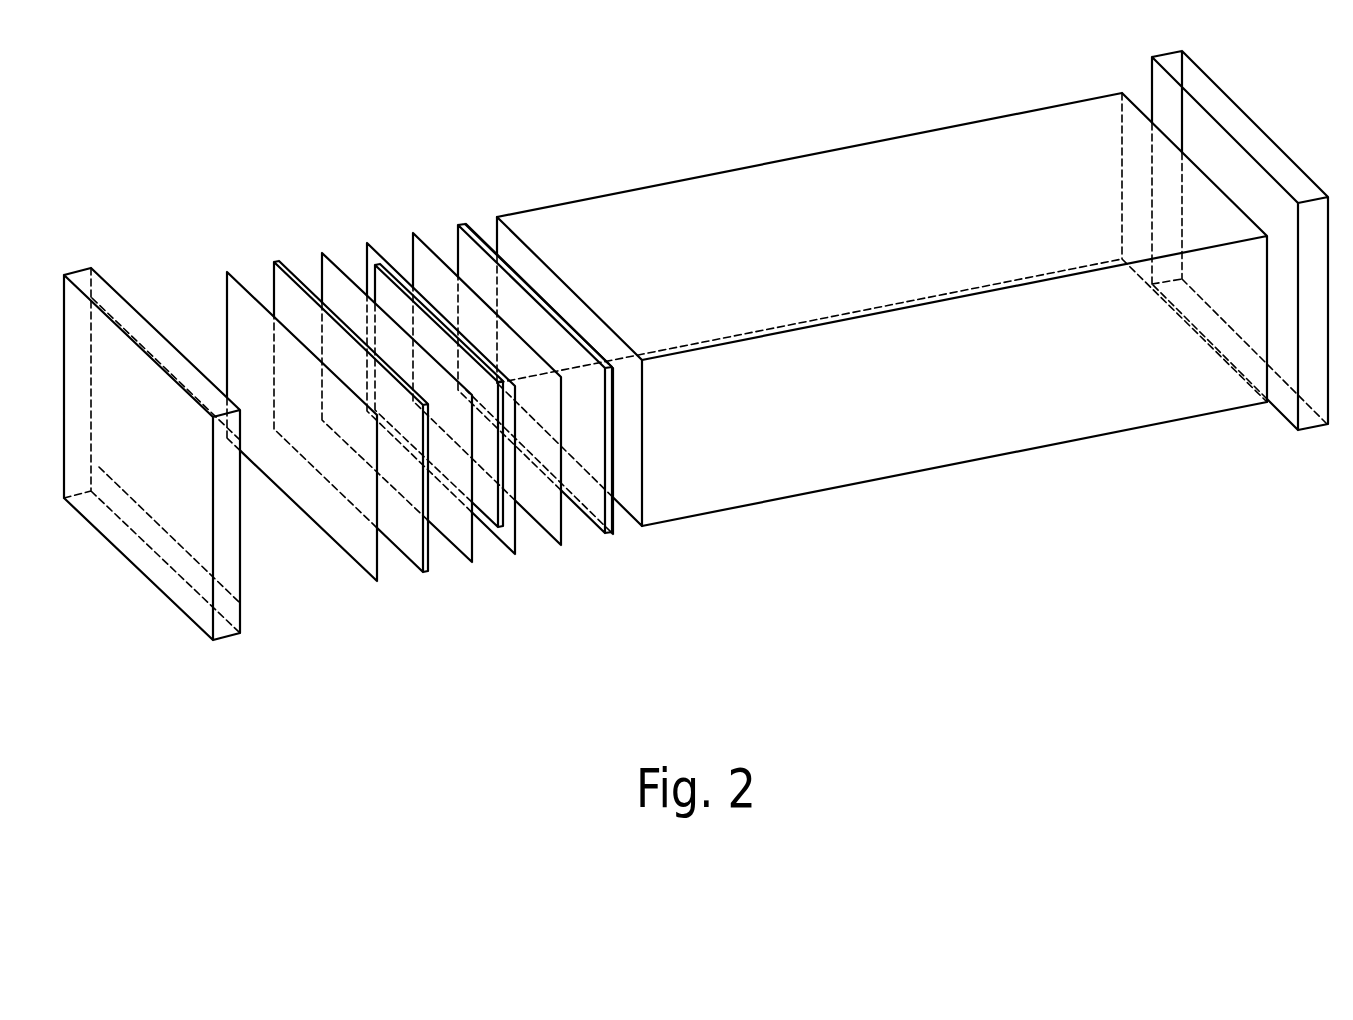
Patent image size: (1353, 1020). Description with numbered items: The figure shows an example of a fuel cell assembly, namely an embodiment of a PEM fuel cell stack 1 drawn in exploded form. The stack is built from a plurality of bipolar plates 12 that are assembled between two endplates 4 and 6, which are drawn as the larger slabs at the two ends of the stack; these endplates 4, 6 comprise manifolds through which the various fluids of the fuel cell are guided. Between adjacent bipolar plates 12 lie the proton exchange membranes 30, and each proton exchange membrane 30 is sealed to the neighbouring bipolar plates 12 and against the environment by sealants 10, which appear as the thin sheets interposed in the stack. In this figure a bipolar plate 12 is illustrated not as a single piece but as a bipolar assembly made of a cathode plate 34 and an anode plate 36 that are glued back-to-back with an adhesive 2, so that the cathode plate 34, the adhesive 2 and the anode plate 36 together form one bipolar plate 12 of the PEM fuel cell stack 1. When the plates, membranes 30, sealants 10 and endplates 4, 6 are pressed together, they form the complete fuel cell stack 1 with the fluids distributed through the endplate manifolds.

The PEM fuel cell stack 1 is at (987, 443).
The adhesive 2 is at (613, 528).
The endplate 4 is at (1307, 392).
The endplate 6 is at (142, 527).
The sealant 10 is at (463, 533).
The bipolar plate 12 is at (417, 547).
The proton exchange membrane 30 is at (512, 532).
The cathode plate 34 is at (588, 517).
The anode plate 36 is at (627, 518).